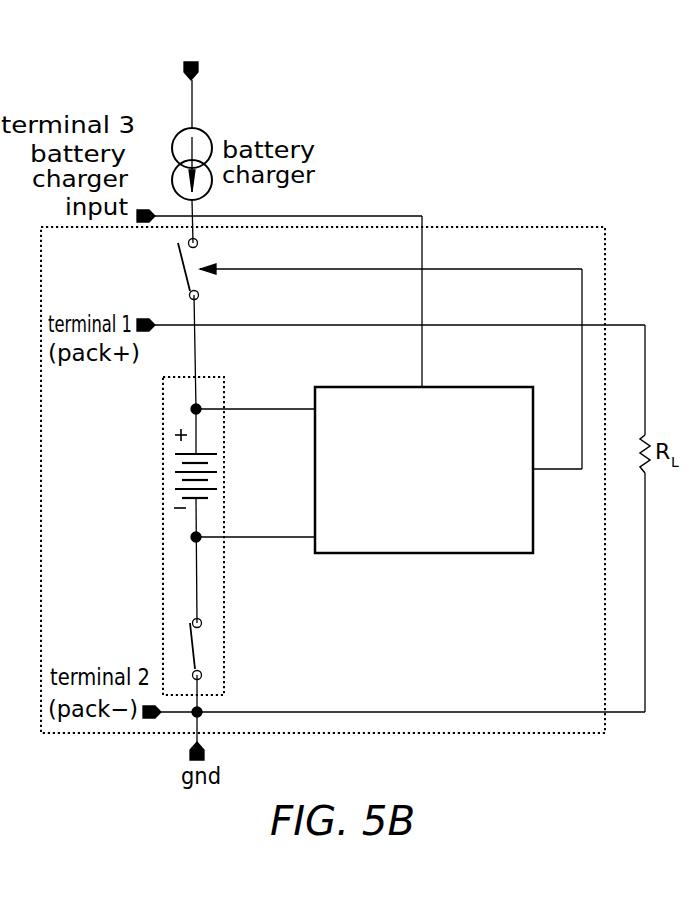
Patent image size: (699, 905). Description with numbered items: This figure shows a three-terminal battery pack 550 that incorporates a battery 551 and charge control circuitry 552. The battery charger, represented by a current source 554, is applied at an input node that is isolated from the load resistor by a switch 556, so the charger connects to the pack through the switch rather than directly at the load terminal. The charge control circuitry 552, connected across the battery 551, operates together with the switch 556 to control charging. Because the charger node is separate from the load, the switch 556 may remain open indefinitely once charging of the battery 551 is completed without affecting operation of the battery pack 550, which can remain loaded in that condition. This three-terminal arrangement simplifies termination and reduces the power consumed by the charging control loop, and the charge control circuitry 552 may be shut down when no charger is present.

The three-terminal battery pack 550 is at (323, 458).
The battery 551 is at (206, 536).
The charge control circuitry 552 is at (424, 493).
The current source 554 is at (152, 137).
The switch 556 is at (343, 354).